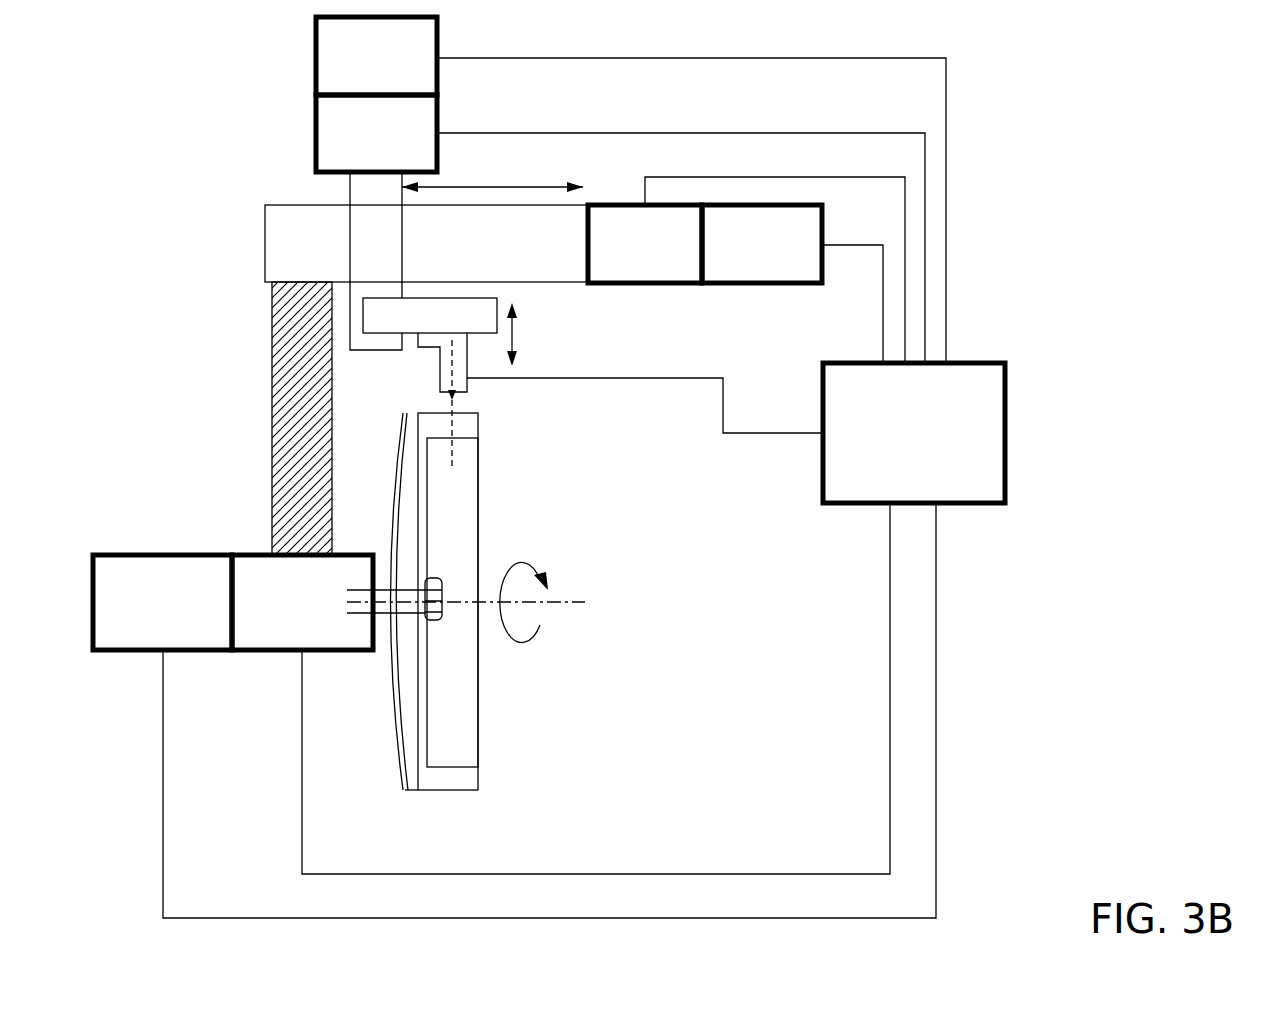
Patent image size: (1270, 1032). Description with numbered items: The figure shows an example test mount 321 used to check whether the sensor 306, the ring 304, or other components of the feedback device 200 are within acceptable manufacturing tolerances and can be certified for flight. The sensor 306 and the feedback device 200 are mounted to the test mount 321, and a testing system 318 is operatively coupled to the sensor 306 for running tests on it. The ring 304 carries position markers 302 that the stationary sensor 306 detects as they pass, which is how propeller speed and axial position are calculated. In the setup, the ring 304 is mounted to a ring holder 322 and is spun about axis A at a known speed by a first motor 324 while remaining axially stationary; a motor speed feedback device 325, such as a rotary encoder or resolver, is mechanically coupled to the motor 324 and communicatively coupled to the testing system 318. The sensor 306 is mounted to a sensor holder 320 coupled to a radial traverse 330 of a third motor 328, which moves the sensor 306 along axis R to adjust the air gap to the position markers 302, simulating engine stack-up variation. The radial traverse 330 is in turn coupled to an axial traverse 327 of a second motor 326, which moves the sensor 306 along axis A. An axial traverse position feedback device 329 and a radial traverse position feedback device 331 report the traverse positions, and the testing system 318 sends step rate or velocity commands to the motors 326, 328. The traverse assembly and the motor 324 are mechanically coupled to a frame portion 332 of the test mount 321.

The feedback device 200 is at (500, 638).
The position markers 302 is at (460, 428).
The ring 304 is at (462, 512).
The sensor 306 is at (440, 372).
The testing system 318 is at (823, 470).
The sensor holder 320 is at (497, 300).
The test mount 321 is at (215, 412).
The ring holder 322 is at (403, 520).
The first motor 324 is at (265, 652).
The motor speed feedback device 325 is at (197, 652).
The second motor 326 is at (650, 283).
The axial traverse 327 is at (265, 243).
The third motor 328 is at (316, 128).
The axial traverse position feedback device 329 is at (762, 283).
The radial traverse 330 is at (350, 186).
The radial traverse position feedback device 331 is at (316, 47).
The frame portion 332 is at (272, 350).